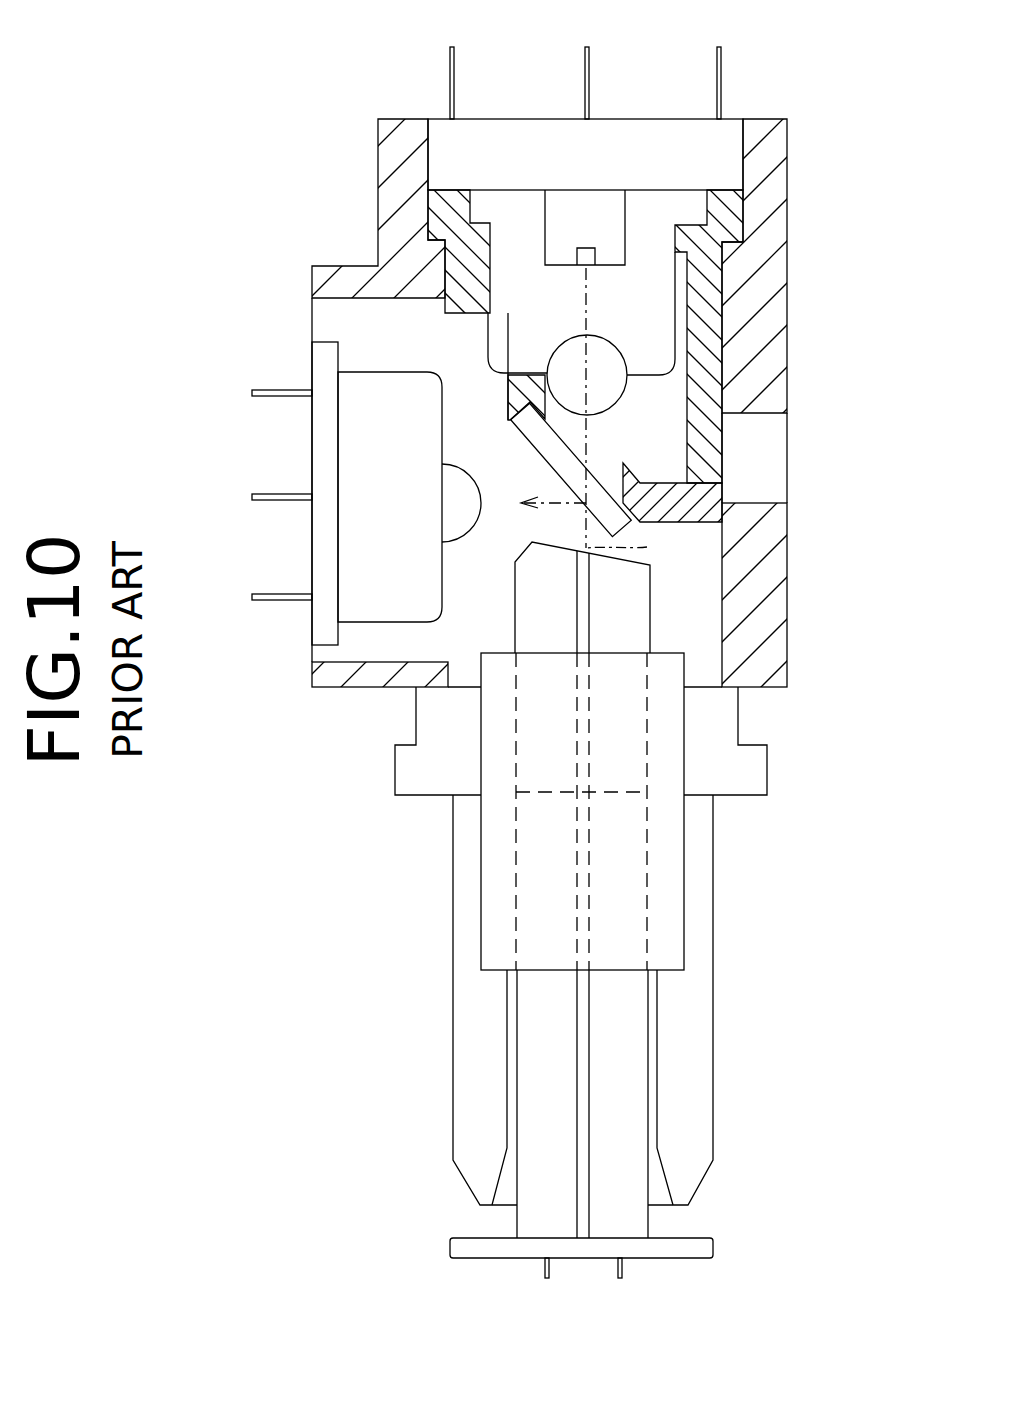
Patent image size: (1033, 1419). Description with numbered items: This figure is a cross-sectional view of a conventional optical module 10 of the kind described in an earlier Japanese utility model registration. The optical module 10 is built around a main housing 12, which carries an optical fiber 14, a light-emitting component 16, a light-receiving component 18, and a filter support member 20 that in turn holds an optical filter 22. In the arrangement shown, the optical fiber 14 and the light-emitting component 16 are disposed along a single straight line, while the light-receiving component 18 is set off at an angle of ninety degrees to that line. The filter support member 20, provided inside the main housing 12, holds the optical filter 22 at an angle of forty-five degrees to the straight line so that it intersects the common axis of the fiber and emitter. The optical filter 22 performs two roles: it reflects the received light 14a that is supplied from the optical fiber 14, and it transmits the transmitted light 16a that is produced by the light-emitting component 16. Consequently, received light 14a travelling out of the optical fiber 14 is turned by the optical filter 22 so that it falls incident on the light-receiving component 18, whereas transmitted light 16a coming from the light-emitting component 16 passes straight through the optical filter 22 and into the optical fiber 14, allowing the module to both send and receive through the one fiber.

The optical module 10 is at (167, 248).
The main housing 12 is at (778, 221).
The optical fiber 14 is at (577, 1045).
The received light 14a is at (550, 507).
The light-emitting component 16 is at (710, 135).
The transmitted light 16a is at (647, 547).
The light-receiving component 18 is at (320, 541).
The filter support member 20 is at (712, 455).
The optical filter 22 is at (520, 442).